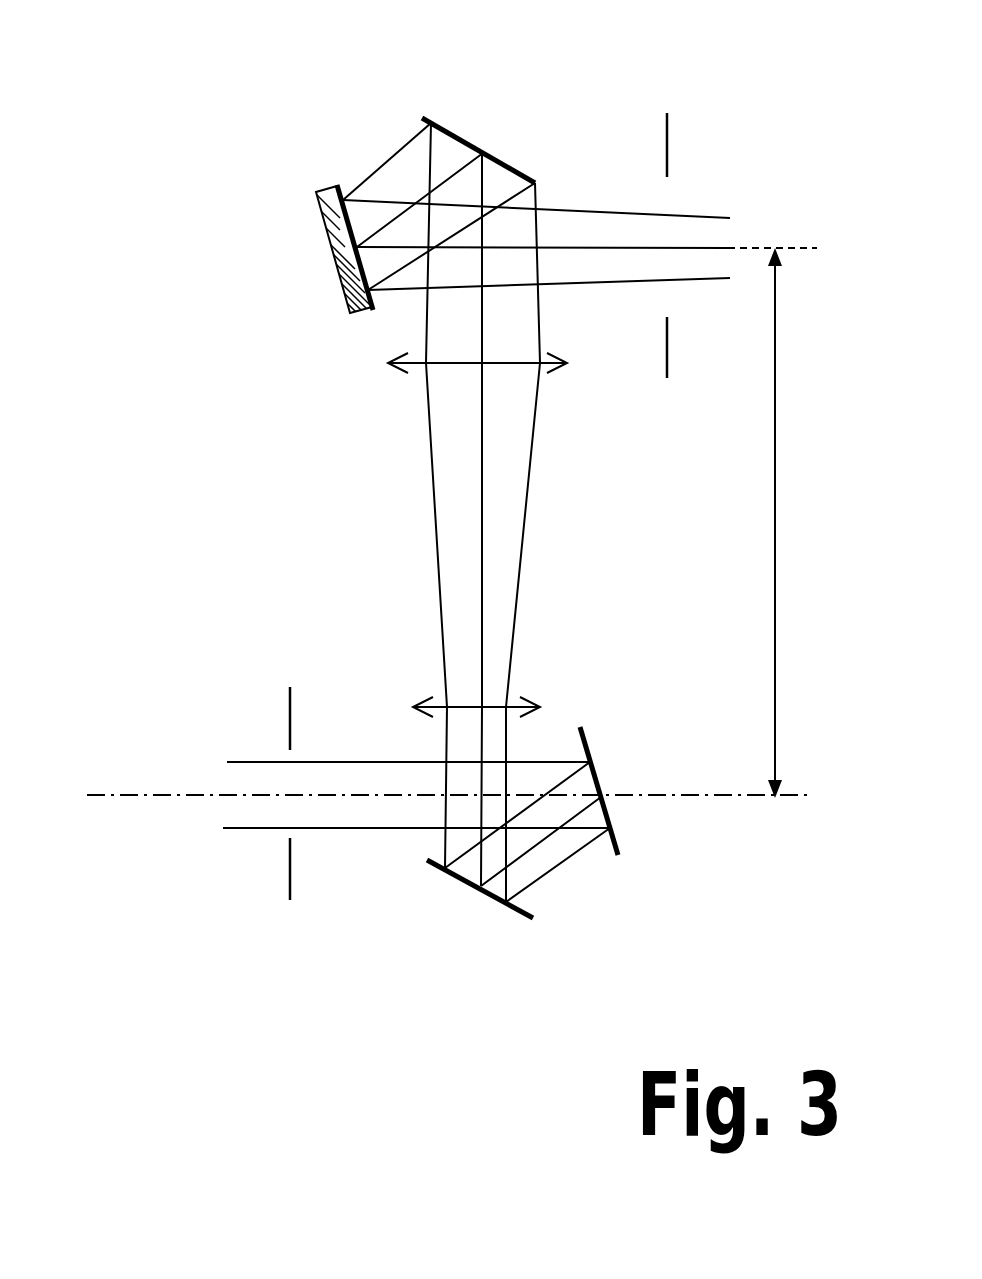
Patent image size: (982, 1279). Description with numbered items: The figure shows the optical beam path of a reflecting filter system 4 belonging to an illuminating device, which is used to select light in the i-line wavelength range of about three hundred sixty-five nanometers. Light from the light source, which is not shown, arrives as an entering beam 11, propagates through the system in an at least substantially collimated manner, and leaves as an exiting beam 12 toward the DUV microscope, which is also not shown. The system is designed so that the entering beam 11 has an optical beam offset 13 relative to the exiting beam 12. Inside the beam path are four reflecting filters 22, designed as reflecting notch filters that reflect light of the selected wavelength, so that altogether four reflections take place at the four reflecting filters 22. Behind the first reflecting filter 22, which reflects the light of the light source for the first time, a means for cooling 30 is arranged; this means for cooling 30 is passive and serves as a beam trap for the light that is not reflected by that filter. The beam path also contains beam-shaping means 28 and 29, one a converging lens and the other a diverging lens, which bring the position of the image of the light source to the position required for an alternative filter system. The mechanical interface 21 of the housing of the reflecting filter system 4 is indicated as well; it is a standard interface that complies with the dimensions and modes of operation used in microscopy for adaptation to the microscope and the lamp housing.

The reflecting filter system 4 is at (278, 511).
The entering beam 11 is at (708, 228).
The exiting beam 12 is at (260, 807).
The optical beam offset 13 is at (773, 550).
The mechanical interface 21 is at (667, 133).
The reflecting filter 22 is at (462, 137).
The beam-shaping means 28 is at (440, 368).
The beam-shaping means 29 is at (447, 703).
The means for cooling 30 is at (327, 253).